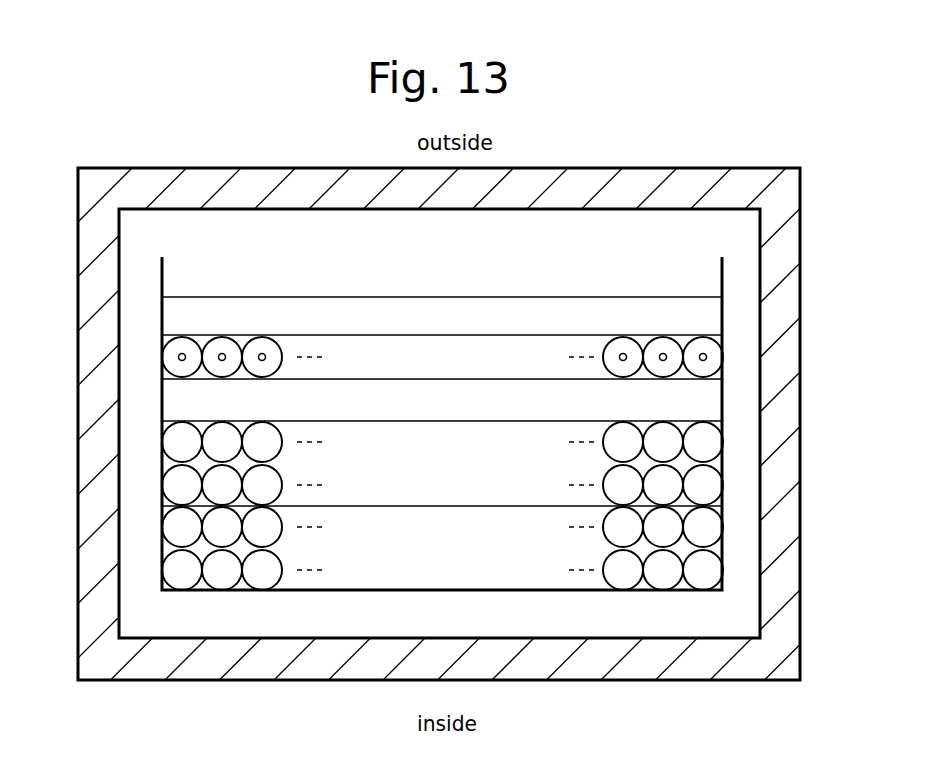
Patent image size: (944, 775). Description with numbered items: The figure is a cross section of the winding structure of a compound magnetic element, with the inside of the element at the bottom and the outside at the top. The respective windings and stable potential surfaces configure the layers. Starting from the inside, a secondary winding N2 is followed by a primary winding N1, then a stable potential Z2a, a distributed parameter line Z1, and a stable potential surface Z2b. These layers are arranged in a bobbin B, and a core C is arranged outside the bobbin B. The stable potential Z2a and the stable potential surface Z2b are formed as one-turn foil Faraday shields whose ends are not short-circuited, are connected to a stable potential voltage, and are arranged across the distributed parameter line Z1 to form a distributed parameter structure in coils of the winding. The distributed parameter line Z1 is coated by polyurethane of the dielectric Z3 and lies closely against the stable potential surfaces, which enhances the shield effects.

The core C is at (782, 370).
The bobbin B is at (452, 423).
The dielectric Z3 is at (278, 340).
The distributed parameter line Z1 is at (442, 363).
The stable potential Z2a is at (442, 405).
The stable potential surface Z2b is at (442, 316).
The primary winding N1 is at (442, 464).
The secondary winding N2 is at (442, 548).